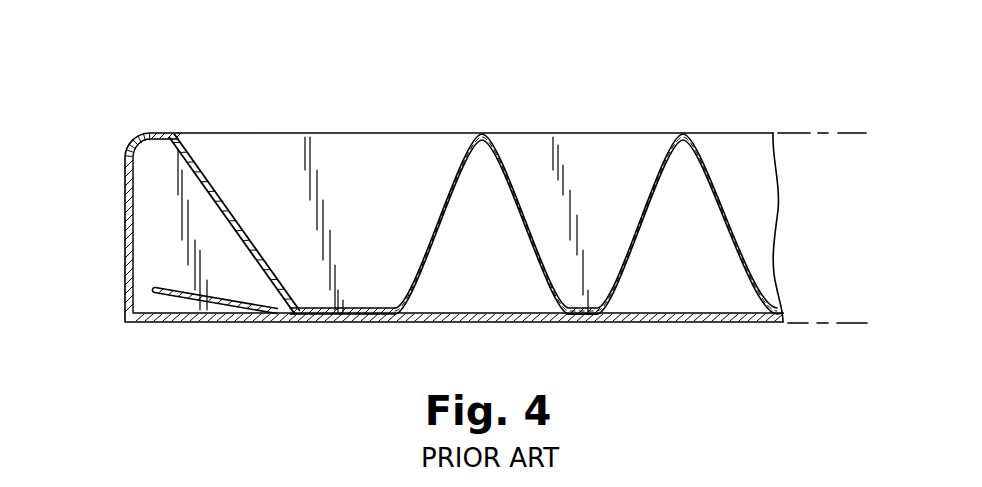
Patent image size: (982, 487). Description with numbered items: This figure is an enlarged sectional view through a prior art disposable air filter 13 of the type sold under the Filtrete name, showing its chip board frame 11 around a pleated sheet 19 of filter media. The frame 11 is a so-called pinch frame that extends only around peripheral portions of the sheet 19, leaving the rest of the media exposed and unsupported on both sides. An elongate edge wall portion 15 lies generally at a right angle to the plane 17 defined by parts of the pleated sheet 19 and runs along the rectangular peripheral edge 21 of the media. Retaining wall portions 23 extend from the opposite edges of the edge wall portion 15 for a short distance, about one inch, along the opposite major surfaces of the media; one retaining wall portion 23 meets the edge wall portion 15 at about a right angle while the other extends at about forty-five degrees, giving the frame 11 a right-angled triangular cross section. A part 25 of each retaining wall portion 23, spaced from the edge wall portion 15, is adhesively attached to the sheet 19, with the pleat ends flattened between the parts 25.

The chip board frame 11 is at (125, 298).
The disposable air filter 13 is at (422, 196).
The edge wall portion 15 is at (125, 246).
The plane 17 is at (790, 132).
The pleated sheet of filter media 19 is at (518, 178).
The peripheral edge 21 is at (158, 300).
The retaining wall portion 23 is at (208, 190).
The part of retaining wall portion 25 is at (305, 309).